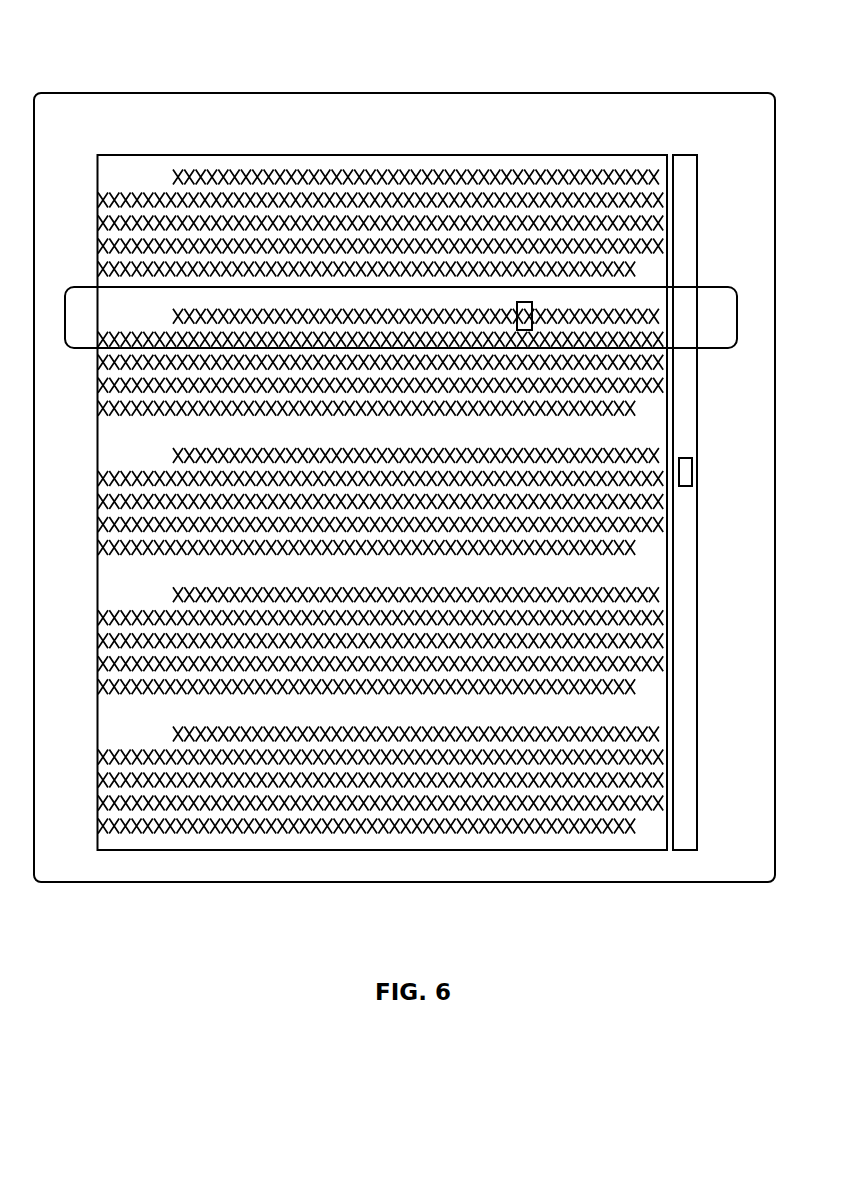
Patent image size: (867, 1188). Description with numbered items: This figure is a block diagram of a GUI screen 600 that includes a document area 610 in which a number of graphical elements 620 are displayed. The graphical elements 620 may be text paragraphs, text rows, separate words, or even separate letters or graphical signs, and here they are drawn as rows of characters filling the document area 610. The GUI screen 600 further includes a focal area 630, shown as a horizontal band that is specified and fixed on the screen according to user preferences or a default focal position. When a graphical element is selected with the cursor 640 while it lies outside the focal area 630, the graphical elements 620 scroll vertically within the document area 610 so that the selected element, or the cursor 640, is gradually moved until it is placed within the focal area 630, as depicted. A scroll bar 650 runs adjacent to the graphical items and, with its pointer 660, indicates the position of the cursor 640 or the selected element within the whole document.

The GUI screen 600 is at (634, 59).
The document area 610 is at (287, 93).
The graphical elements 620 is at (539, 155).
The focal area 630 is at (704, 287).
The cursor 640 is at (532, 305).
The scroll bar 650 is at (687, 155).
The pointer 660 is at (691, 458).